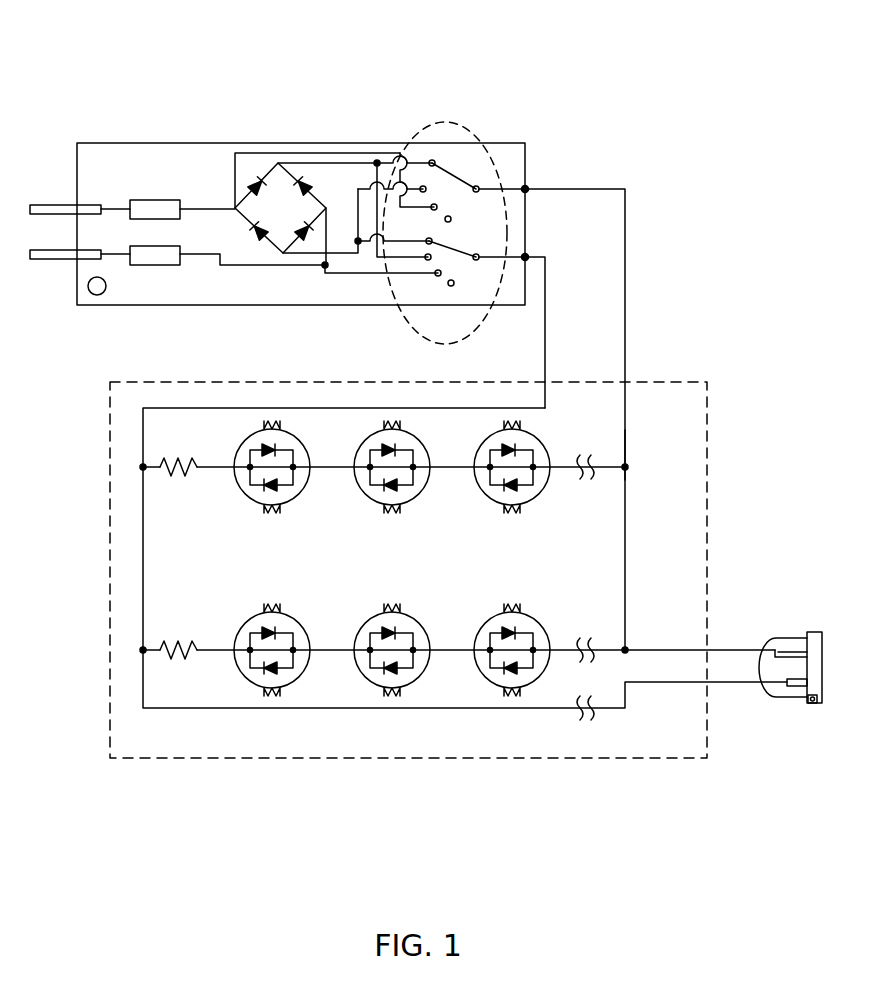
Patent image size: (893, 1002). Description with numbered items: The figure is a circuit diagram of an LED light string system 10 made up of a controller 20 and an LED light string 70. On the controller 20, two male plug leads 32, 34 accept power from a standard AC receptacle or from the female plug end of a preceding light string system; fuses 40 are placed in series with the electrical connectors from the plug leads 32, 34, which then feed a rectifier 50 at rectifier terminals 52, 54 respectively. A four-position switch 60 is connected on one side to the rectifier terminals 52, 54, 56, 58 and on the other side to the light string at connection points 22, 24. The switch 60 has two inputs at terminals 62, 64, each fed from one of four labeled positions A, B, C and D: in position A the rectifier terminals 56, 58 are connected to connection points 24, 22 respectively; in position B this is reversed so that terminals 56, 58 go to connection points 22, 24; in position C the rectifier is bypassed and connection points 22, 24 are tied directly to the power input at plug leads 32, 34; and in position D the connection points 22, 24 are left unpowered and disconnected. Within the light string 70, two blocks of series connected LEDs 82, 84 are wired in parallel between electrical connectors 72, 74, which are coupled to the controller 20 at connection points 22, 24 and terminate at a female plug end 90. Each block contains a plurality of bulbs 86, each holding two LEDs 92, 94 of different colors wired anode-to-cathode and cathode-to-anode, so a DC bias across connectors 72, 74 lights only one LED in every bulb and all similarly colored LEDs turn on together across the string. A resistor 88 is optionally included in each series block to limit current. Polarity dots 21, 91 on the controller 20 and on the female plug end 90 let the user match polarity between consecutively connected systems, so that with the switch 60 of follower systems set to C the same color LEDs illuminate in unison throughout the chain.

The LED light string system 10 is at (140, 33).
The controller 20 is at (119, 142).
The polarity dot 21 is at (78, 306).
The connection point 22 is at (543, 255).
The connection point 24 is at (543, 188).
The male plug lead 32 is at (43, 260).
The male plug lead 34 is at (49, 204).
The fuses 40 is at (153, 252).
The rectifier 50 is at (282, 256).
The rectifier terminal 52 is at (327, 206).
The rectifier terminal 54 is at (234, 206).
The rectifier terminal 56 is at (278, 162).
The rectifier terminal 58 is at (326, 255).
The four-position switch 60 is at (472, 126).
The switch terminal 62 is at (486, 182).
The switch terminal 64 is at (482, 290).
The LED light string 70 is at (192, 760).
The electrical connector 72 is at (552, 407).
The electrical connector 74 is at (626, 445).
The block of series connected LEDs 82 is at (135, 440).
The block of series connected LEDs 84 is at (135, 625).
The bulb 86 is at (356, 627).
The resistor 88 is at (178, 477).
The female plug end 90 is at (822, 631).
The polarity dot 91 is at (813, 704).
The LED 92 is at (262, 449).
The LED 94 is at (279, 482).